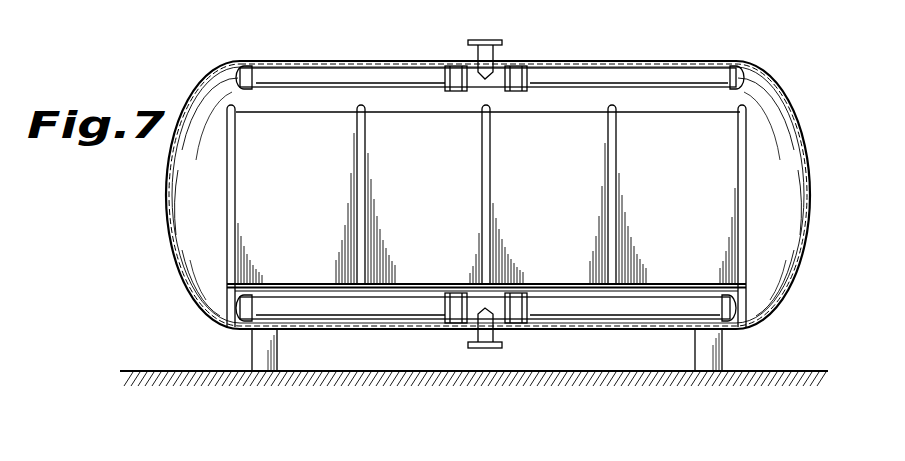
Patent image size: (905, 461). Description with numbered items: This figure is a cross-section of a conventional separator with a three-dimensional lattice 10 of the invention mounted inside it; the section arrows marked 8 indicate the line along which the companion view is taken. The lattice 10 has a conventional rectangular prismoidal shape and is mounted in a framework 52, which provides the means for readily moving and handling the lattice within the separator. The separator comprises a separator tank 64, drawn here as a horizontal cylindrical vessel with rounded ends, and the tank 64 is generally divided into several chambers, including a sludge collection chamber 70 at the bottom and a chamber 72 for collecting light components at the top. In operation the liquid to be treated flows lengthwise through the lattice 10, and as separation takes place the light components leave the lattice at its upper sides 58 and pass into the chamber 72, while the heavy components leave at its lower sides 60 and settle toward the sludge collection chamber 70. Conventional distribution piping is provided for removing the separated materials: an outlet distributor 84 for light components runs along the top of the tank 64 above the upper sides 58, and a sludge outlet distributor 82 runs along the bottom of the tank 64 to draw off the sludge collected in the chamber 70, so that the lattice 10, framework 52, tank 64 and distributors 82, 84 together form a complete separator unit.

The three-dimensional lattice 10 is at (650, 128).
The framework 52 is at (747, 130).
The upper sides 58 is at (300, 112).
The lower sides 60 is at (747, 200).
The separator tank 64 is at (182, 279).
The sludge collection chamber 70 is at (404, 321).
The chamber for collecting light components 72 is at (560, 97).
The sludge outlet distributor 82 is at (723, 328).
The outlet distributor for light components 84 is at (388, 76).
The section line 8- 8 is at (466, 20).